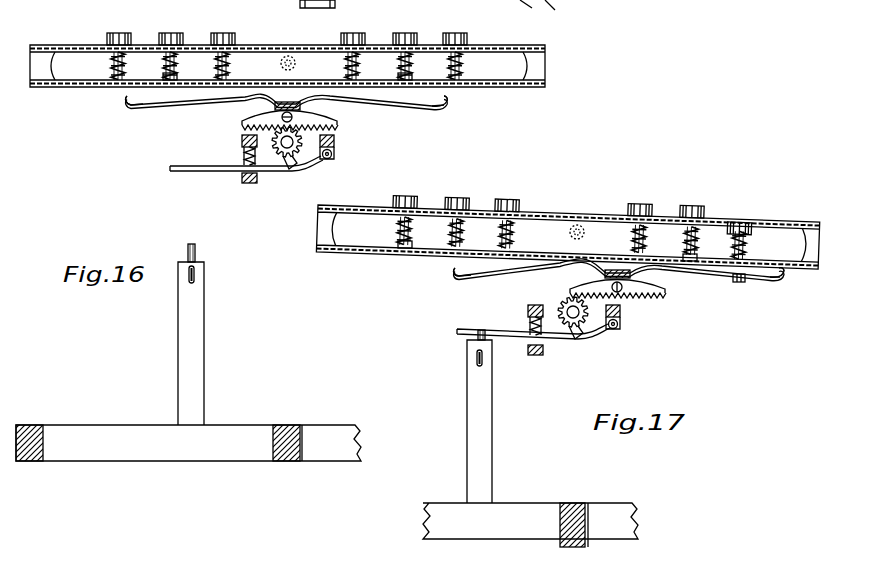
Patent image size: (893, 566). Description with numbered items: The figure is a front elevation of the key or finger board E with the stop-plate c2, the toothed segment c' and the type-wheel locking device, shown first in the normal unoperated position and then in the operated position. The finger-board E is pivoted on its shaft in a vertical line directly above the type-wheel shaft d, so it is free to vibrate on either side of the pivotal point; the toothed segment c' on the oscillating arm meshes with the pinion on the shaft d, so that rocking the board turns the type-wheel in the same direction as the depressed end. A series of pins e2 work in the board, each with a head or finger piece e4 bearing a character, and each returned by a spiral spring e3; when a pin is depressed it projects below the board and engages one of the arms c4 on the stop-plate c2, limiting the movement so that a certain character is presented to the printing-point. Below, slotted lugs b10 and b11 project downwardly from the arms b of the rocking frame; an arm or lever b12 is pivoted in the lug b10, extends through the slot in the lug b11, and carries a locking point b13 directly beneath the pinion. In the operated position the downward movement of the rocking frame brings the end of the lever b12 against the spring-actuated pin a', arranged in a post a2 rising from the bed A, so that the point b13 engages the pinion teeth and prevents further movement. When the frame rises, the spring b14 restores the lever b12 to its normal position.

In FIG. 16, the head or finger piece e4 is at (168, 33).
In FIG. 17, the head or finger piece e4 is at (452, 199).
In FIG. 16, the spiral spring e3 is at (165, 64).
In FIG. 17, the spiral spring e3 is at (403, 233).
In FIG. 16, the pin e2 is at (177, 64).
In FIG. 17, the pin e2 is at (462, 238).
In FIG. 16, the finger-board E is at (288, 56).
In FIG. 17, the finger-board E is at (577, 225).
In FIG. 16, the stop-plate c2 is at (437, 115).
In FIG. 17, the stop-plate c2 is at (500, 272).
In FIG. 16, the arms on the stop-plate c4 is at (131, 106).
In FIG. 17, the arms on the stop-plate c4 is at (458, 276).
In FIG. 16, the toothed segment c' is at (300, 123).
In FIG. 17, the toothed segment c' is at (628, 292).
In FIG. 16, the type-wheel shaft d is at (284, 153).
In FIG. 17, the type-wheel shaft d is at (568, 305).
In FIG. 16, the arms of the rocking frame b is at (241, 141).
In FIG. 17, the arms of the rocking frame b is at (527, 309).
In FIG. 16, the spring b14 is at (243, 159).
In FIG. 17, the spring b14 is at (529, 325).
In FIG. 16, the arm or lever b12 is at (193, 172).
In FIG. 17, the arm or lever b12 is at (506, 340).
In FIG. 16, the slotted lug b11 is at (246, 184).
In FIG. 17, the slotted lug b11 is at (537, 356).
In FIG. 16, the locking point or projection b13 is at (293, 170).
In FIG. 17, the locking point or projection b13 is at (578, 340).
In FIG. 16, the spring-actuated pin a' is at (264, 209).
In FIG. 17, the spring-actuated pin a' is at (526, 340).
In FIG. 16, the slotted lug b10 is at (333, 156).
In FIG. 17, the slotted lug b10 is at (619, 326).
In FIG. 16, the post a2 is at (191, 343).
In FIG. 17, the post a2 is at (479, 421).
In FIG. 16, the bed or base A is at (34, 425).